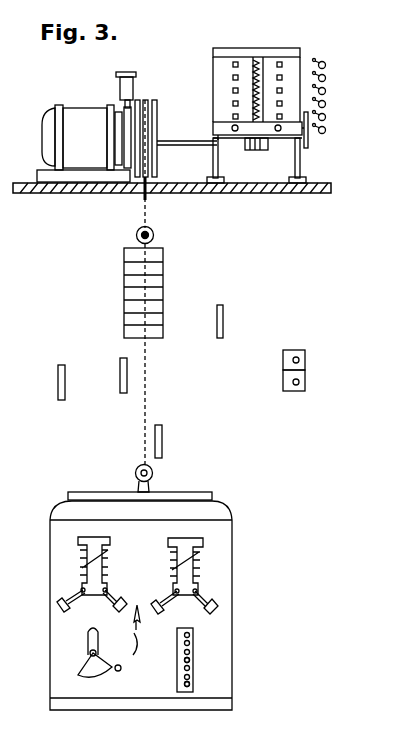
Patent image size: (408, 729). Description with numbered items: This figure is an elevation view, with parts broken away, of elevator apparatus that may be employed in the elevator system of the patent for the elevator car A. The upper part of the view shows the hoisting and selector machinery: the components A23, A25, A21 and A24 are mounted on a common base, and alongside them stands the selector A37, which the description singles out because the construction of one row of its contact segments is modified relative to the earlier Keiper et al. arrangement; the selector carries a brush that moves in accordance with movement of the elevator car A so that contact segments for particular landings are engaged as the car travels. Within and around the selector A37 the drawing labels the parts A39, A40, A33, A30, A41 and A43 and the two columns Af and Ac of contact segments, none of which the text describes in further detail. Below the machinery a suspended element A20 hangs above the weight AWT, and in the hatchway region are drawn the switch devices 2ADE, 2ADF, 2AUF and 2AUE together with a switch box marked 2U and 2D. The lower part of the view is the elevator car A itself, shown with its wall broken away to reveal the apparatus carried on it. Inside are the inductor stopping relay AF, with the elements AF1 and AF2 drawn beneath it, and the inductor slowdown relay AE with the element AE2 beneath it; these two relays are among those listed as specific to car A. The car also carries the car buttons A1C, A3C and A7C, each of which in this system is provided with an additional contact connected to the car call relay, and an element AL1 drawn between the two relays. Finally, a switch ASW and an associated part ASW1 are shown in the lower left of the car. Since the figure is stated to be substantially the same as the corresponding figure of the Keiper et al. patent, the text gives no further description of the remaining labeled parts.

The motor A23 is at (67, 104).
The brake / bearing bracket A25 is at (116, 110).
The cable pulley A21 is at (157, 106).
The drive shaft A24 is at (202, 147).
The selector A37 is at (200, 68).
The relay base bar A39 is at (212, 128).
The ratchet A40 is at (250, 62).
The contact column Af is at (233, 64).
The contact column Ac is at (281, 66).
The contact A33 is at (240, 134).
The contact A30 is at (278, 133).
The contact bank A41 is at (323, 61).
The armature A43 is at (309, 146).
The cable link A20 is at (148, 213).
The weight AWT is at (167, 263).
The limit switch 2ADE is at (225, 323).
The limit switch 2ADF is at (120, 373).
The limit switch 2AUF is at (57, 393).
The limit switch 2AUE is at (163, 443).
The up switch 2U is at (299, 360).
The down switch 2D is at (299, 382).
The elevator car A is at (233, 517).
The inductor stopping relay AF is at (105, 568).
The relay contact AF1 is at (65, 607).
The relay contact AF2 is at (127, 602).
The lamp AL1 is at (137, 630).
The inductor slowdown relay AE is at (195, 560).
The relay contact AE2 is at (207, 612).
The car button A7C is at (190, 635).
The car button A3C is at (190, 662).
The car button A1C is at (190, 684).
The switch ASW is at (91, 655).
The switch contact ASW1 is at (121, 670).